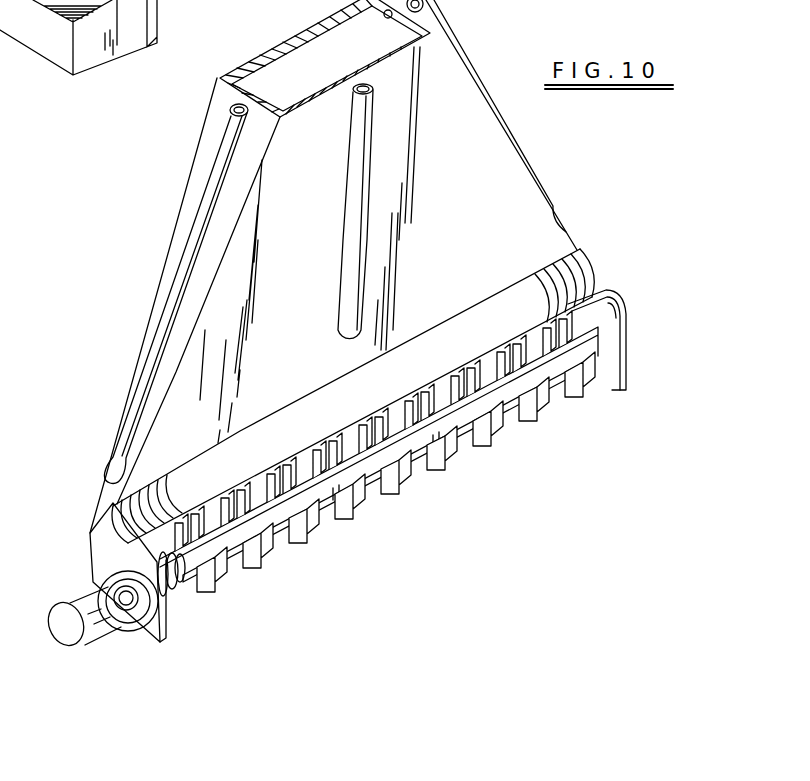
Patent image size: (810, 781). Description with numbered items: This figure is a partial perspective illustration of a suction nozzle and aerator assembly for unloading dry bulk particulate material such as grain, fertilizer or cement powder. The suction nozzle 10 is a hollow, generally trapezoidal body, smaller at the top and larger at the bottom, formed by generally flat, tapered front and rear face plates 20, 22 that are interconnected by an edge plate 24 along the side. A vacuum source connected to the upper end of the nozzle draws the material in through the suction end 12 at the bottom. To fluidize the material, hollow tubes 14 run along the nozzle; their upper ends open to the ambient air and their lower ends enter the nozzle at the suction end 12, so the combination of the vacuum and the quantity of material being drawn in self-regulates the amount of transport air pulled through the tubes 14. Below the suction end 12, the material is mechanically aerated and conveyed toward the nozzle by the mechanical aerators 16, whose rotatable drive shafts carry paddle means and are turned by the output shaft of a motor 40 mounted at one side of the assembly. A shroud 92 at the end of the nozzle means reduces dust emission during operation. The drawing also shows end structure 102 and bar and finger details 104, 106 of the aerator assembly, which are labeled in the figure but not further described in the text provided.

The suction nozzle 10 is at (495, 88).
The suction end 12 is at (265, 583).
The hollow tubes 14 is at (502, 133).
The mechanical aerators 16 is at (442, 467).
The front face plate 20 is at (515, 212).
The rear face plate 22 is at (157, 297).
The edge plate 24 is at (200, 170).
The motor 40 is at (72, 640).
The shroud 92 is at (610, 293).
The end plate 102 is at (88, 558).
The finger rail 104 is at (397, 403).
The fingers 106 is at (305, 412).